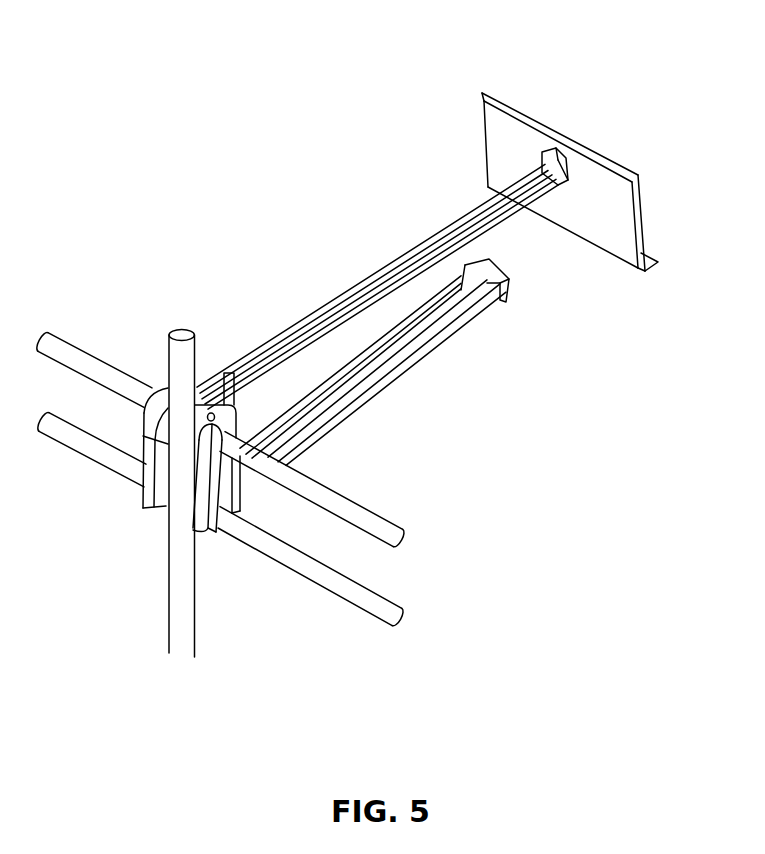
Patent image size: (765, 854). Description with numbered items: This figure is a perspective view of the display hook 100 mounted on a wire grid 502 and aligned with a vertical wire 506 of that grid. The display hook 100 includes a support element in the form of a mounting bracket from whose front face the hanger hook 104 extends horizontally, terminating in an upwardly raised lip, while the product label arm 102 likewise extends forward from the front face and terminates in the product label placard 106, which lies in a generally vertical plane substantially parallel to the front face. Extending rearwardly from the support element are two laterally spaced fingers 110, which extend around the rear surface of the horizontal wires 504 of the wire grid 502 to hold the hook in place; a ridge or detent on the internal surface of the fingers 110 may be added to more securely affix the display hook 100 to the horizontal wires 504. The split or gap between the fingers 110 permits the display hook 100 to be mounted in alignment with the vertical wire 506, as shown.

The display hook 100 is at (255, 215).
The product label arm 102 is at (357, 290).
The hanger hook 104 is at (460, 332).
The product label placard 106 is at (527, 110).
The fingers 110 is at (153, 490).
The wire grid 502 is at (428, 582).
The horizontal wires 504 is at (78, 350).
The vertical wire 506 is at (185, 567).